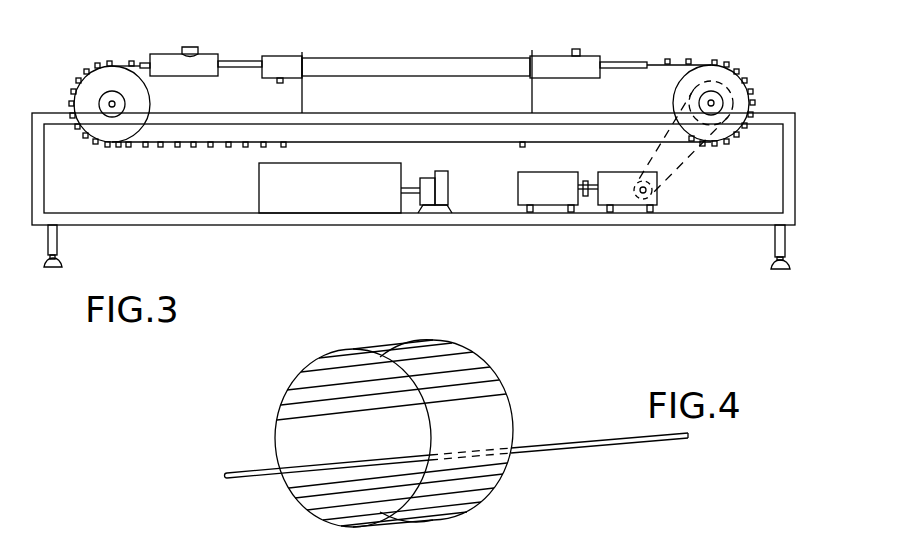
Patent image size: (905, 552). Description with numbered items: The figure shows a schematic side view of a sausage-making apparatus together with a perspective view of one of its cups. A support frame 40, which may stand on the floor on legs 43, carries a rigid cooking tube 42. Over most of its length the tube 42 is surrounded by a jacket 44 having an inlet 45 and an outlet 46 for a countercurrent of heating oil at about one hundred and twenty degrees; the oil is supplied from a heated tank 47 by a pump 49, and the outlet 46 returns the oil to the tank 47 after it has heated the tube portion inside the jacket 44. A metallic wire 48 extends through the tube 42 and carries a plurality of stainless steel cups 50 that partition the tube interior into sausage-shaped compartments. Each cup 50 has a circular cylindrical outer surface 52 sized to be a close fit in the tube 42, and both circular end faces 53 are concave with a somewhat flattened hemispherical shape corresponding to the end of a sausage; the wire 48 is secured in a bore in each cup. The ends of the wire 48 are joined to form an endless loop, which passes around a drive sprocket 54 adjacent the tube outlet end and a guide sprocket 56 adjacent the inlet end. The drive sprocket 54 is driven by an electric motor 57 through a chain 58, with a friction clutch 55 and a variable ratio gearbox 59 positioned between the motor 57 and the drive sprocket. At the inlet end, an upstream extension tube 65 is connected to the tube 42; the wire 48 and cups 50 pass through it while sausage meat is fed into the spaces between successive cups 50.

In FIG. 3, the support frame 40 is at (797, 172).
In FIG. 3, the cooking tube 42 is at (623, 62).
In FIG. 3, the legs 43 is at (58, 236).
In FIG. 3, the jacket 44 is at (424, 66).
In FIG. 3, the inlet 45 is at (576, 49).
In FIG. 3, the outlet 46 is at (279, 83).
In FIG. 3, the heated tank 47 is at (330, 188).
In FIG. 3, the metallic wire 48 is at (522, 143).
In FIG. 4, the metallic wire 48 is at (563, 450).
In FIG. 3, the pump 49 is at (437, 212).
In FIG. 3, the stainless steel cups 50 is at (667, 59).
In FIG. 4, the stainless steel cups 50 is at (483, 357).
In FIG. 4, the circular cylindrical outer surface 52 is at (498, 408).
In FIG. 4, the circular end faces 53 is at (370, 428).
In FIG. 3, the drive sprocket 54 is at (736, 81).
In FIG. 4, the drive sprocket 54 is at (478, 456).
In FIG. 3, the friction clutch 55 is at (590, 201).
In FIG. 3, the guide sprocket 56 is at (93, 85).
In FIG. 3, the electric motor 57 is at (556, 206).
In FIG. 3, the chain 58 is at (689, 178).
In FIG. 3, the variable ratio gearbox 59 is at (620, 204).
In FIG. 3, the upstream extension tube 65 is at (172, 68).